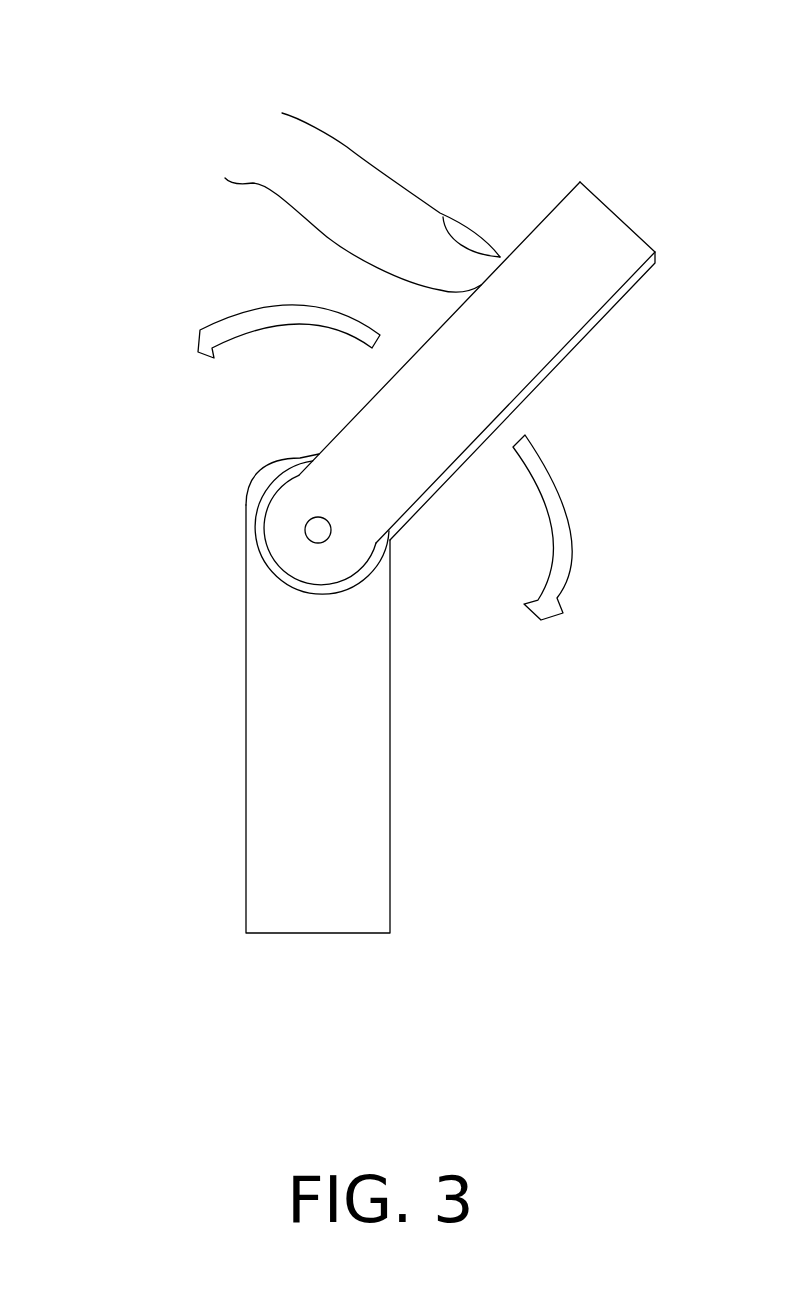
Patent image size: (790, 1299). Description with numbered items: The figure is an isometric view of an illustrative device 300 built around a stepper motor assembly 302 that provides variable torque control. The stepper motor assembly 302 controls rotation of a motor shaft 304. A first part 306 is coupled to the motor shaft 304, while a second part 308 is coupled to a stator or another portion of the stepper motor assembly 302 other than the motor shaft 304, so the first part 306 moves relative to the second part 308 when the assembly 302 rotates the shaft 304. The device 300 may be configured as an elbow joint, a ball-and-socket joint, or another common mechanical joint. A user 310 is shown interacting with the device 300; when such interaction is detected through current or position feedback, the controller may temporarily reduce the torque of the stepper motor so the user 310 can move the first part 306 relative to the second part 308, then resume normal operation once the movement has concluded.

The device 300 is at (128, 37).
The stepper motor assembly 302 is at (246, 529).
The motor shaft 304 is at (310, 520).
The first part 306 is at (640, 238).
The second part 308 is at (245, 920).
The user 310 is at (315, 122).